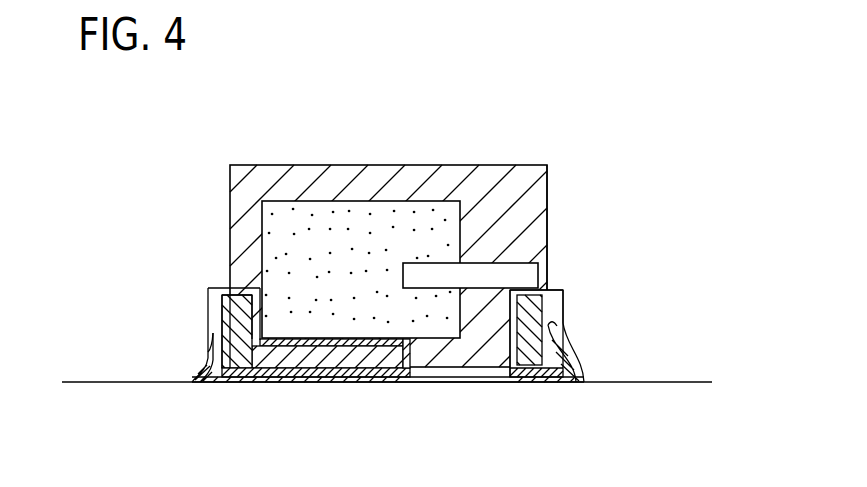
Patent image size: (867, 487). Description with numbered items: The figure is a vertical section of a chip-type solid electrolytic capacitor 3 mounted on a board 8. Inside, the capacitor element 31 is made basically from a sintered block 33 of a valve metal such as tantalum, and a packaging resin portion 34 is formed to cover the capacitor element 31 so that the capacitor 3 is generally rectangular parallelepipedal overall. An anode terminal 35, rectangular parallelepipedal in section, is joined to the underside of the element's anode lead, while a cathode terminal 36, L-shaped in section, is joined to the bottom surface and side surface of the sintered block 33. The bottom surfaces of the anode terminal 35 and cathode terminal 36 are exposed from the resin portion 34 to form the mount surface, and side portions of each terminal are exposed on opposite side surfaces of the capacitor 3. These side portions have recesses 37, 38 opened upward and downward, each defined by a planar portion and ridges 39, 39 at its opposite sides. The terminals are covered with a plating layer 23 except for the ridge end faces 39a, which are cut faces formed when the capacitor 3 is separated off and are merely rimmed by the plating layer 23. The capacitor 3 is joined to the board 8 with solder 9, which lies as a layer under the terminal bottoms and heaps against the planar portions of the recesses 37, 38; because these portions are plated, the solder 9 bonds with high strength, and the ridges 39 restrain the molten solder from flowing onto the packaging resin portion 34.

The solid electrolytic capacitor 3 is at (523, 165).
The board 8 is at (672, 380).
The solder 9 is at (113, 340).
The plating layer 23 is at (406, 348).
The capacitor element 31 is at (373, 200).
The sintered block 33 is at (313, 218).
The packaging resin portion 34 is at (477, 185).
The anode terminal 35 is at (527, 357).
The cathode terminal 36 is at (220, 458).
The recess 37 is at (563, 320).
The recess 38 is at (208, 302).
The ridge 39 is at (212, 288).
The ridge end face 39a is at (208, 323).